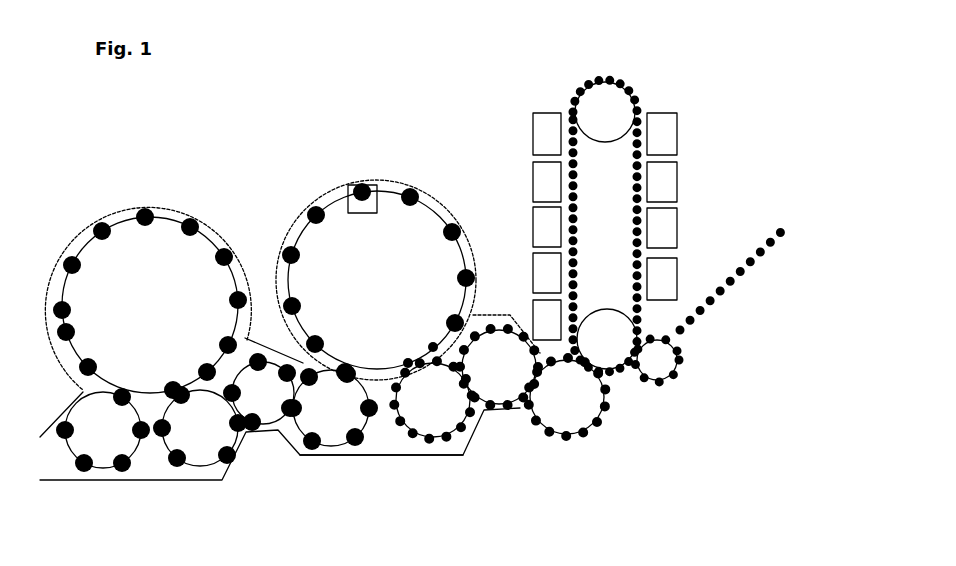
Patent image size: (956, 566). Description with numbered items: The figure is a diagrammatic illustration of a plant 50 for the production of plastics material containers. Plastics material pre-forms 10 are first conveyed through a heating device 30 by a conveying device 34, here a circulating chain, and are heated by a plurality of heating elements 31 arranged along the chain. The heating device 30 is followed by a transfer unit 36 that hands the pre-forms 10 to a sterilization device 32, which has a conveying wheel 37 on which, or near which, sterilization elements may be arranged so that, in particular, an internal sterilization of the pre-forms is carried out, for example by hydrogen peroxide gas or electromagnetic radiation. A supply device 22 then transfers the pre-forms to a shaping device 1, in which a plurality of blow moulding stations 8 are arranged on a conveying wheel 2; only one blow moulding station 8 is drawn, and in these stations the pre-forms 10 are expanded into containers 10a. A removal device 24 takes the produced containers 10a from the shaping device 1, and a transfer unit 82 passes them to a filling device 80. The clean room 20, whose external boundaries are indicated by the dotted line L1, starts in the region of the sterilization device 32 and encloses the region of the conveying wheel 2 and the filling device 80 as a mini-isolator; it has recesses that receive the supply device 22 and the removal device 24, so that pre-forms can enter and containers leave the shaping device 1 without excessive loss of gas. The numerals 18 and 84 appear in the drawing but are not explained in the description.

The shaping device 1 is at (355, 158).
The conveying wheel 2 is at (376, 242).
The blow moulding station 8 is at (373, 187).
The plastics material pre-form 10 is at (688, 325).
The plastics material container 10a is at (360, 433).
The cylinder surface 18 is at (427, 200).
The clean room 20 is at (305, 190).
The supply device 22 is at (453, 413).
The removal device 24 is at (327, 433).
The heating device 30 is at (577, 191).
The heating elements 31 is at (545, 140).
The sterilization device 32 is at (496, 293).
The conveying device 34 is at (607, 103).
The transfer unit 36 is at (557, 410).
The conveying wheel 37 is at (497, 383).
The plant 50 is at (288, 85).
The filling device 80 is at (120, 247).
The transfer unit 82 is at (222, 427).
The roller 84 is at (87, 437).
The dotted line L1 is at (385, 457).